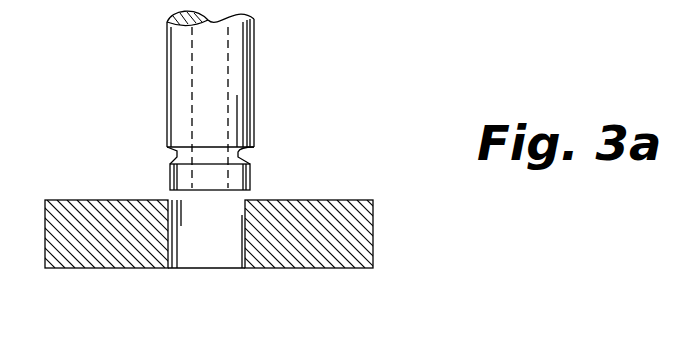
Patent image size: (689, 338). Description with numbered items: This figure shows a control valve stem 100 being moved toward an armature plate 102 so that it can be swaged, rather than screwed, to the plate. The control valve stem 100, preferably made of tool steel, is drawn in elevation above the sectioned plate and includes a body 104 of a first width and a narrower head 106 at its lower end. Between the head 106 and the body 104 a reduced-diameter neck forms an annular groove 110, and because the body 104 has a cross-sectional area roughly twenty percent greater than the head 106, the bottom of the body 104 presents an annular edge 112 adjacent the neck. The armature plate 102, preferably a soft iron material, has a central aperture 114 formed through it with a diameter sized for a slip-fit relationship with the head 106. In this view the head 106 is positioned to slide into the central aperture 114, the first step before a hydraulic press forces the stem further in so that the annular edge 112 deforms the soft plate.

The control valve stem 100 is at (230, 100).
The armature plate 102 is at (310, 256).
The body 104 is at (176, 128).
The head 106 is at (255, 178).
The annular groove 110 is at (178, 152).
The annular edge 112 is at (247, 154).
The central aperture 114 is at (243, 238).